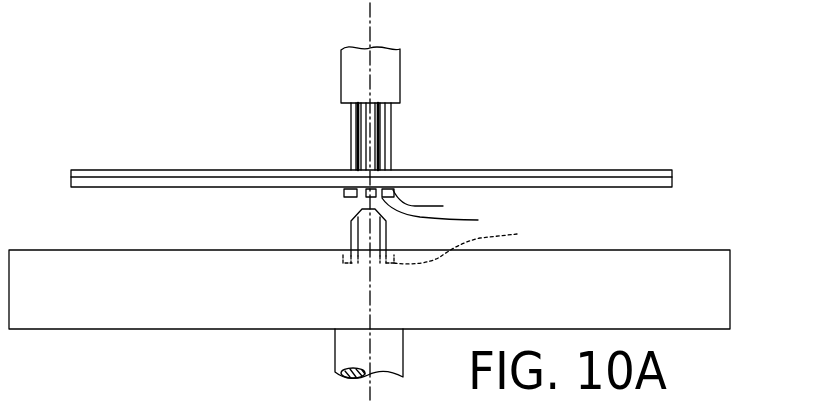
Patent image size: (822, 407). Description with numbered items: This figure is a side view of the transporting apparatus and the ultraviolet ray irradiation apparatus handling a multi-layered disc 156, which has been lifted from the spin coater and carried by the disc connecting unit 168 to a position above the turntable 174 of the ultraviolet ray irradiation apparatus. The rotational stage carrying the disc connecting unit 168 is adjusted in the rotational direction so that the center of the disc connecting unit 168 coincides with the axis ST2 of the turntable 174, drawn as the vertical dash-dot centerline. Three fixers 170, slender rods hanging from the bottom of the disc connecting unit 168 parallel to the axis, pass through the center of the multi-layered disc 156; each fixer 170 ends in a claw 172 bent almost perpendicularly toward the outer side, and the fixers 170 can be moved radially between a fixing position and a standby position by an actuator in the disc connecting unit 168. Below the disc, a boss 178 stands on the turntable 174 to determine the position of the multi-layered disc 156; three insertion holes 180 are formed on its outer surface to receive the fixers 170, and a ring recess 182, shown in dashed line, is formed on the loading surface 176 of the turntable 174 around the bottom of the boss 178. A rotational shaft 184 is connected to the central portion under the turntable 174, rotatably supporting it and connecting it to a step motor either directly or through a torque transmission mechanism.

The axis of the turntable ST2 is at (374, 37).
The disc connecting unit 168 is at (341, 72).
The fixers 170 is at (352, 137).
The multi-layered disc 156 is at (672, 170).
The claw 172 is at (346, 197).
The turntable 174 is at (732, 262).
The loading surface 176 is at (69, 250).
The boss 178 is at (357, 209).
The insertion holes 180 is at (352, 229).
The ring recess 182 is at (476, 244).
The rotational shaft 184 is at (334, 358).